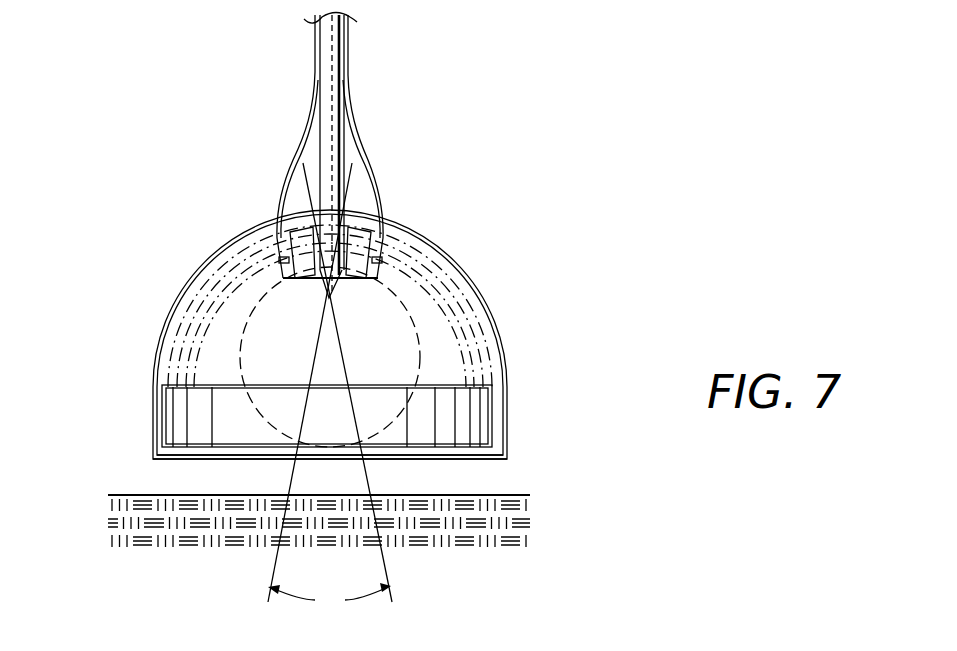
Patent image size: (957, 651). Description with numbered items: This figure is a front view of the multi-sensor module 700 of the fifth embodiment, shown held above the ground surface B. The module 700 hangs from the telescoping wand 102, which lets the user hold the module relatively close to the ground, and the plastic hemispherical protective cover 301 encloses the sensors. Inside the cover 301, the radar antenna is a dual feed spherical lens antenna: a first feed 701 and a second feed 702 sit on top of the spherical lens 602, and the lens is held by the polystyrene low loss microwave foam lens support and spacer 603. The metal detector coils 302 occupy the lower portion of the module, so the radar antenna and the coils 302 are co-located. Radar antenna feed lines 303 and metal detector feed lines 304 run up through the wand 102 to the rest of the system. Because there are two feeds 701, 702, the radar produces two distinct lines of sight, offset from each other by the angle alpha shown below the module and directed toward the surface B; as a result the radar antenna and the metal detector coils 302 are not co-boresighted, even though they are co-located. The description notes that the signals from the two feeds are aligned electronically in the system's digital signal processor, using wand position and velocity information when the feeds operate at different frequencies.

The multi-sensor module 700 is at (158, 150).
The metal detector feed lines 304 is at (346, 57).
The telescoping wand 102 is at (331, 104).
The radar antenna feed lines 303 is at (297, 138).
The first radar feed 701 is at (307, 247).
The second radar feed 702 is at (354, 247).
The plastic hemispherical protective cover 301 is at (167, 316).
The metal detector coils 302 is at (177, 461).
The spherical lens 602 is at (398, 351).
The foam lens support and spacer 603 is at (468, 397).
The surface B is at (510, 486).